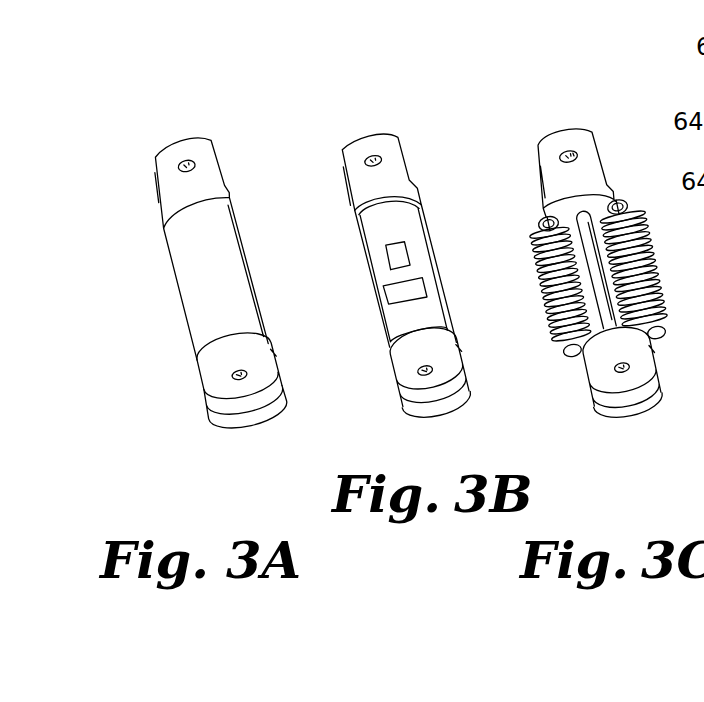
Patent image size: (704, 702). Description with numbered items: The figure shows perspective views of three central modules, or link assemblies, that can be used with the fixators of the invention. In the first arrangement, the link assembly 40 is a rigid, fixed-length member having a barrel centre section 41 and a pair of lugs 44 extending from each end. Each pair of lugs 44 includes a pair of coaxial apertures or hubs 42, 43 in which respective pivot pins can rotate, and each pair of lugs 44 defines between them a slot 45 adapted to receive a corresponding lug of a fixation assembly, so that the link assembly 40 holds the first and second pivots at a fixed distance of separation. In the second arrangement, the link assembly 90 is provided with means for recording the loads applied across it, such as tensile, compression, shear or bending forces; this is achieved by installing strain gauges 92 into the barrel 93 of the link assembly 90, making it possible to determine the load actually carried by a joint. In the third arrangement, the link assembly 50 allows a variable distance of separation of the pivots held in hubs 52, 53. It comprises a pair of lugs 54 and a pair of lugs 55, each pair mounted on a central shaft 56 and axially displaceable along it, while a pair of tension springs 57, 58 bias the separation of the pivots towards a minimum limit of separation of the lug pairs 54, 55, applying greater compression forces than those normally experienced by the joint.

In FIG. 3A, the link assembly 40 is at (214, 259).
In FIG. 3A, the barrel centre section 41 is at (190, 268).
In FIG. 3A, the coaxial aperture or hub 42 is at (179, 162).
In FIG. 3A, the coaxial aperture or hub 43 is at (232, 377).
In FIG. 3A, the lugs 44 is at (205, 152).
In FIG. 3A, the slot 45 is at (240, 413).
In FIG. 3B, the link assembly 90 is at (387, 229).
In FIG. 3B, the strain gauges 92 is at (397, 257).
In FIG. 3B, the barrel 93 is at (352, 232).
In FIG. 3C, the link assembly 50 is at (585, 261).
In FIG. 3C, the hub 52 is at (574, 150).
In FIG. 3C, the hub 53 is at (617, 368).
In FIG. 3C, the lugs 54 is at (538, 148).
In FIG. 3C, the lugs 55 is at (607, 392).
In FIG. 3C, the central shaft 56 is at (595, 270).
In FIG. 3C, the tension spring 57 is at (533, 243).
In FIG. 3C, the tension spring 58 is at (643, 245).